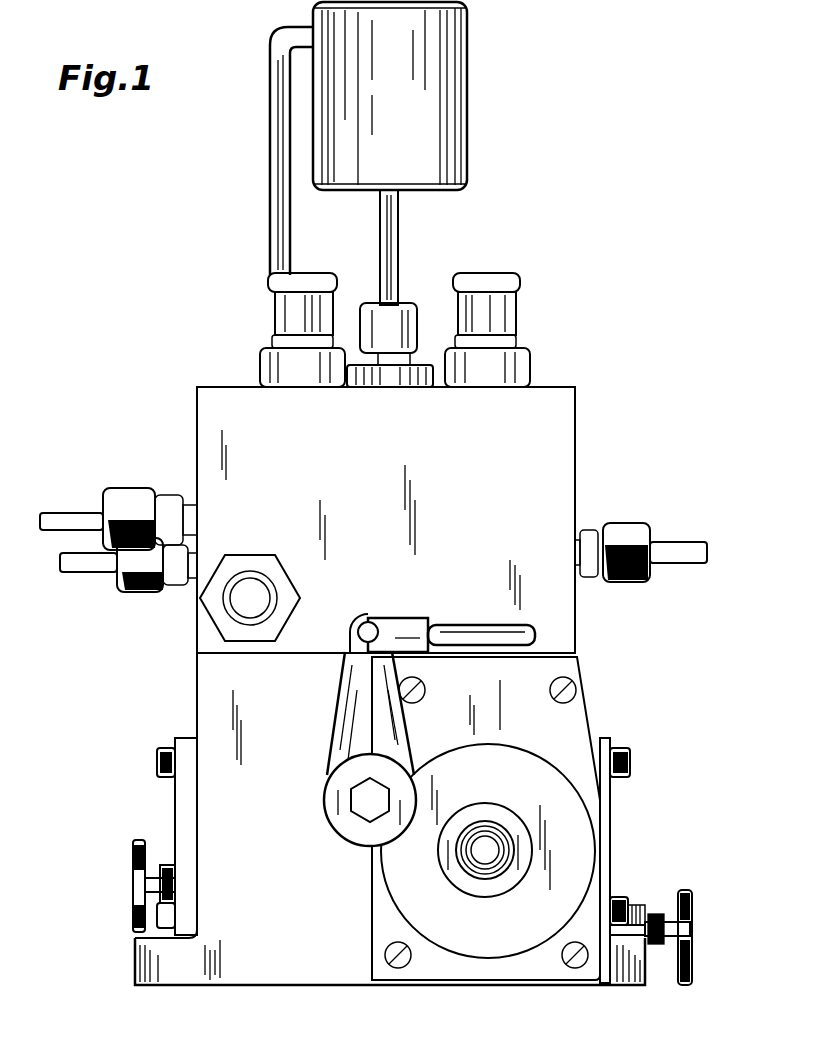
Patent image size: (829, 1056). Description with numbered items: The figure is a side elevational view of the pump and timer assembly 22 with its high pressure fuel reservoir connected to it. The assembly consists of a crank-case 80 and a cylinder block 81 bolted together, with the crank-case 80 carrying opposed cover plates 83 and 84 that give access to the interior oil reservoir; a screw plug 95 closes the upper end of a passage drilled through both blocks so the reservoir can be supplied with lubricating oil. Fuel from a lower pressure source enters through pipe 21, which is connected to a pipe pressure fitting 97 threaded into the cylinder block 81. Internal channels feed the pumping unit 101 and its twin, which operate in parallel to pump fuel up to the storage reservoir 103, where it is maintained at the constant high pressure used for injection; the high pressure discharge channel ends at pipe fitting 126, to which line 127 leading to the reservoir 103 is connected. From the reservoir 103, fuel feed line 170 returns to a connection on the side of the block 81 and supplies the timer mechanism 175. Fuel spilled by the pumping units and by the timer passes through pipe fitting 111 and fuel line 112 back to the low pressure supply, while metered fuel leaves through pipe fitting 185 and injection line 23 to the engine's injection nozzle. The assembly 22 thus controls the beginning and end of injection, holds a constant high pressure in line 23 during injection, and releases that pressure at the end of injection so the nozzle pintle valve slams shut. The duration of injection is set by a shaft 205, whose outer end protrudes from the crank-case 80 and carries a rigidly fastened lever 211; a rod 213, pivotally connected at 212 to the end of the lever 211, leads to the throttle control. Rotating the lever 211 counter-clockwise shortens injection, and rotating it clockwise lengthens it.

The storage reservoir 103 is at (447, 116).
The fuel feed line 170 is at (270, 156).
The line 127 is at (393, 238).
The pipe fitting 126 is at (407, 306).
The screw plug 95 is at (389, 386).
The timer mechanism 175 is at (282, 318).
The pumping unit 101 is at (508, 316).
The cylinder block 81 is at (560, 433).
The pump and timer assembly 22 is at (502, 480).
The pipe fitting 185 is at (133, 493).
The injection line 23 is at (60, 513).
The pipe fitting 111 is at (141, 590).
The fuel line 112 is at (86, 572).
The pipe pressure fitting 97 is at (632, 528).
The pipe 21 is at (692, 563).
The pivotal connection 212 is at (368, 621).
The rod 213 is at (443, 627).
The lever 211 is at (345, 710).
The shaft 205 is at (352, 833).
The cover plate 84 is at (175, 800).
The cover plate 83 is at (607, 798).
The crank-case 80 is at (257, 970).